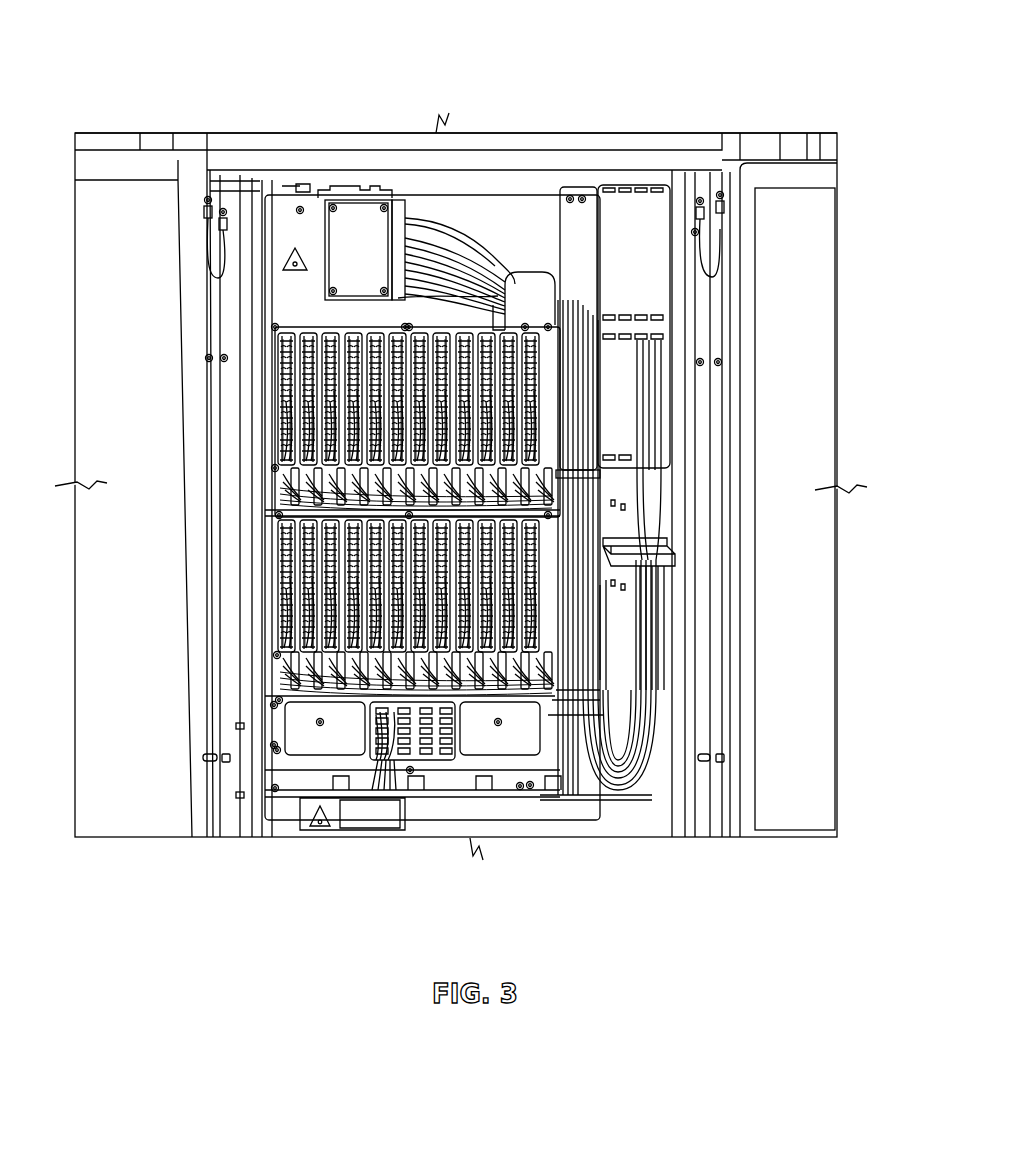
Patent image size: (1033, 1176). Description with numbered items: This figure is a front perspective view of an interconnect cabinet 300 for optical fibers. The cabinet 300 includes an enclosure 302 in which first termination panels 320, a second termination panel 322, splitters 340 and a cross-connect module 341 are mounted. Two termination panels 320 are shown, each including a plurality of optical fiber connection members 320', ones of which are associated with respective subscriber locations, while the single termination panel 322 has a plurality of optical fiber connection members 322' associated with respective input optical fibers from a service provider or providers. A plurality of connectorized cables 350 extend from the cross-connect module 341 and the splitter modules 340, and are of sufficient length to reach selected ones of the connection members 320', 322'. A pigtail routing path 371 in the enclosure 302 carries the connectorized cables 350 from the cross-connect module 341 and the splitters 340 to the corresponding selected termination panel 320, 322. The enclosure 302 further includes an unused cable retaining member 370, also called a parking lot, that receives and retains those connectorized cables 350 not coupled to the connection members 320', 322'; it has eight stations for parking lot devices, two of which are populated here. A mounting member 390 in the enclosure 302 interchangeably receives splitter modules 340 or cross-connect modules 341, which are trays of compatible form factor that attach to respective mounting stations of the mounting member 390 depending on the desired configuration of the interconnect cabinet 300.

The interconnect cabinet 300 is at (660, 80).
The enclosure 302 is at (305, 133).
The first termination panel 320 is at (355, 288).
The optical fiber connection member 320' is at (343, 471).
The second termination panel 322 is at (406, 792).
The optical fiber connection member 322' is at (412, 792).
The splitter module 340 is at (403, 203).
The cross-connect module 341 is at (372, 205).
The connectorized cable 350 is at (627, 777).
The unused cable retaining member 370 is at (652, 320).
The pigtail routing path 371 is at (575, 192).
The mounting member 390 is at (346, 192).